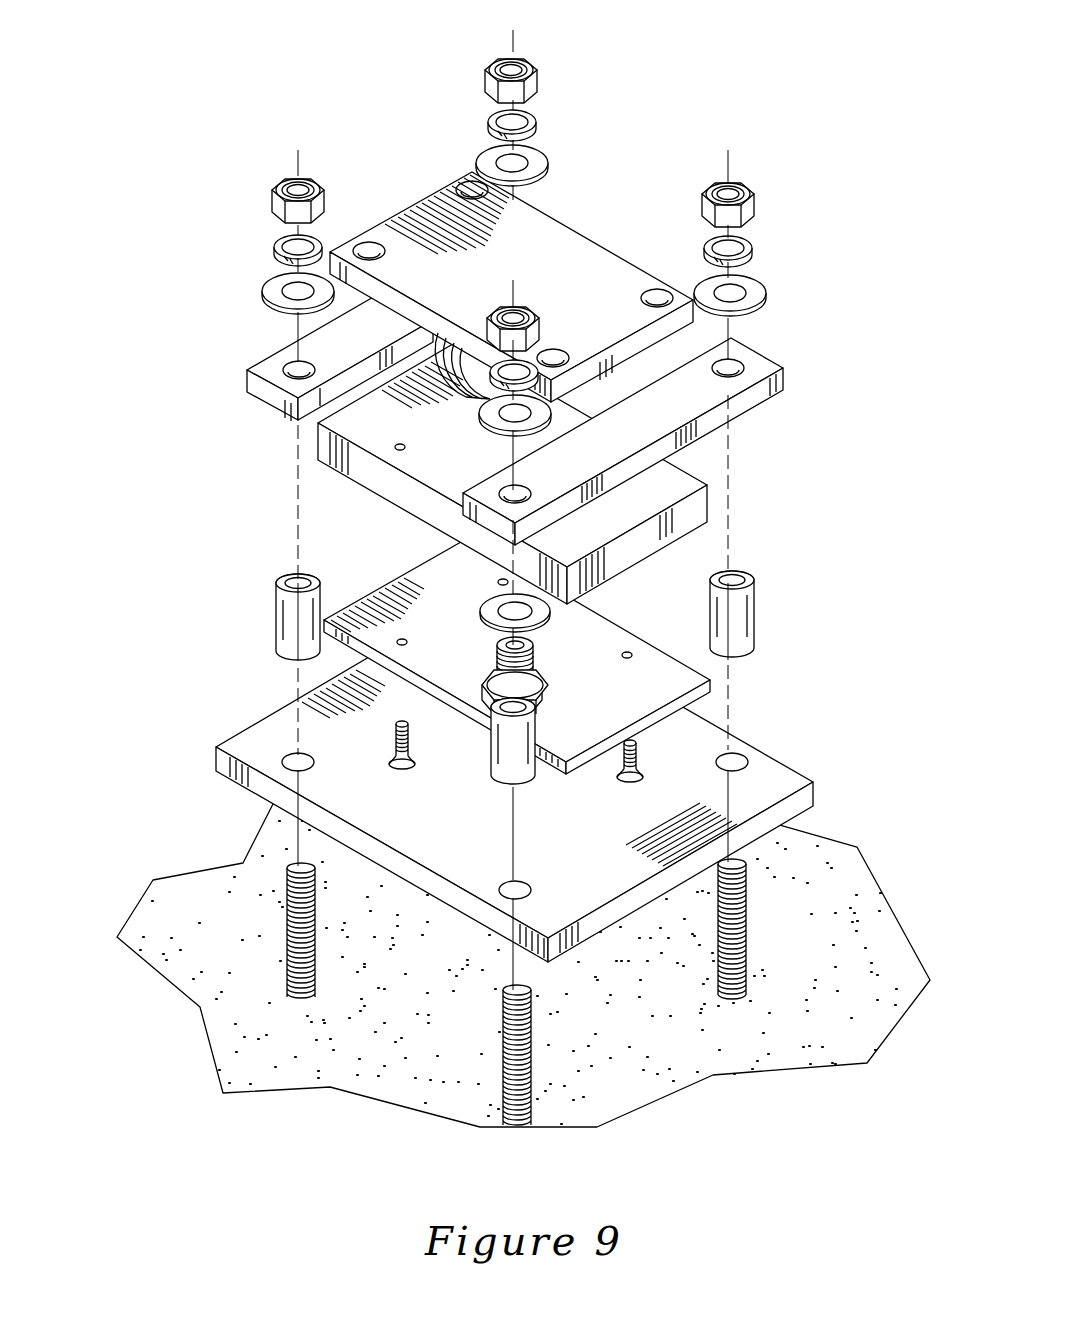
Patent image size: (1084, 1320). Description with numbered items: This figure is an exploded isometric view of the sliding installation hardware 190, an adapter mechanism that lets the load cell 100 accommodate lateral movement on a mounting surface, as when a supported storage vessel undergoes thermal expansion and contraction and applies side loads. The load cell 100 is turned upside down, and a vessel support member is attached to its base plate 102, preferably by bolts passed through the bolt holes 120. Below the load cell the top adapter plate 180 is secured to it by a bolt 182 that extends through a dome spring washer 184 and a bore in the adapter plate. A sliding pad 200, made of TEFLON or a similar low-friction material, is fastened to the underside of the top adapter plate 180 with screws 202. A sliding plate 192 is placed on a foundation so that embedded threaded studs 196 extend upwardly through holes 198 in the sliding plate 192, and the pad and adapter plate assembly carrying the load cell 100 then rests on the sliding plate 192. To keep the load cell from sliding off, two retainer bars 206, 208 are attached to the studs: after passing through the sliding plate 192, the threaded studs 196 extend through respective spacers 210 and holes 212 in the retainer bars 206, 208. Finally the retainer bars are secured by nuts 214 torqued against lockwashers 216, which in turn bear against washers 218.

The sliding installation hardware 190 is at (523, 589).
The load cell 100 is at (455, 368).
The base plate 102 is at (530, 263).
The bolt holes 120 is at (655, 308).
The top adapter plate 180 is at (710, 490).
The bolt 182 is at (498, 668).
The dome spring washer 184 is at (490, 606).
The sliding plate 192 is at (790, 788).
The threaded studs 196 is at (290, 905).
The holes 198 is at (296, 752).
The sliding pad 200 is at (614, 650).
The screws 202 is at (410, 752).
The retainer bar 206 is at (248, 378).
The retainer bar 208 is at (735, 390).
The spacers 210 is at (290, 618).
The holes 212 is at (290, 372).
The nuts 214 is at (282, 186).
The lockwashers 216 is at (276, 248).
The washers 218 is at (265, 296).